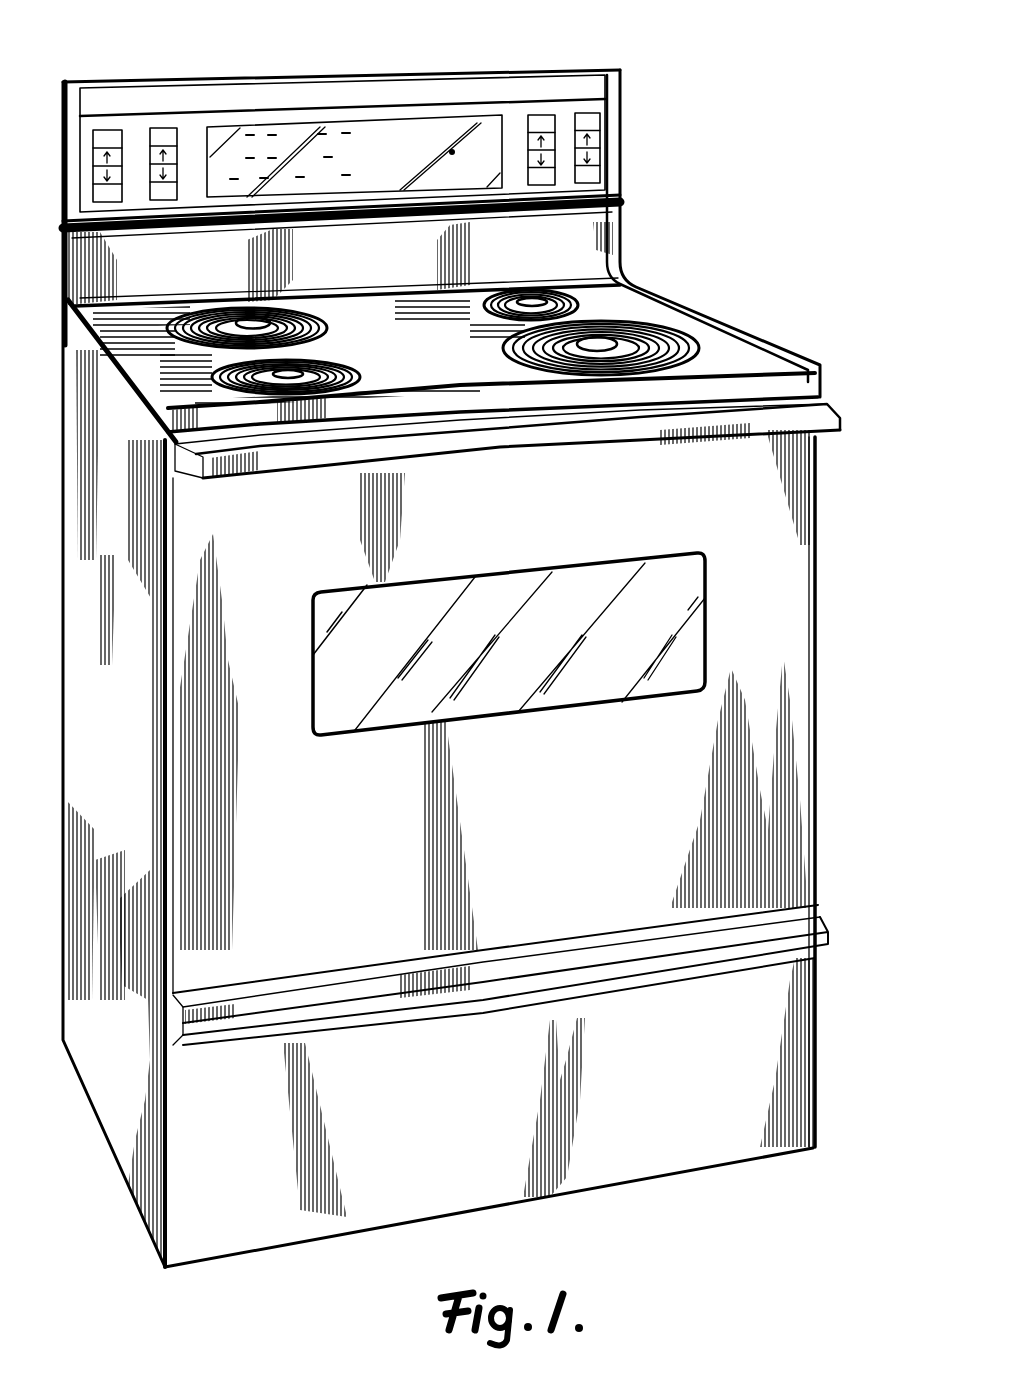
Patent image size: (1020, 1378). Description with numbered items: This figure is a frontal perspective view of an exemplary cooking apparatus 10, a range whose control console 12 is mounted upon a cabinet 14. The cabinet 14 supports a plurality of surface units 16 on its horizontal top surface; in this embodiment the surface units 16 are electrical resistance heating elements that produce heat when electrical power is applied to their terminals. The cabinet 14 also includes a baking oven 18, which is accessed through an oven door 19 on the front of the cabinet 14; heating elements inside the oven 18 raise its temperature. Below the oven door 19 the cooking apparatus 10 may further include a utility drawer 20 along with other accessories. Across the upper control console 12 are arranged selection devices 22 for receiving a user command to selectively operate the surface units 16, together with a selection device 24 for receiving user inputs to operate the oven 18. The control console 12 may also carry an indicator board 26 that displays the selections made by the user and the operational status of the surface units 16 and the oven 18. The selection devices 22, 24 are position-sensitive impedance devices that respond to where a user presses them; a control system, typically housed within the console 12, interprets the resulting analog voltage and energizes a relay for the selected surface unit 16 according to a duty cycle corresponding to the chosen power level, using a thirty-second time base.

The cooking apparatus 10 is at (684, 172).
The control console 12 is at (498, 64).
The cabinet 14 is at (750, 310).
The surface units 16 is at (273, 307).
The baking oven 18 is at (832, 512).
The oven door 19 is at (815, 637).
The utility drawer 20 is at (818, 1004).
The selection devices 22 is at (165, 128).
The selection device 24 is at (398, 125).
The indicator board 26 is at (276, 135).